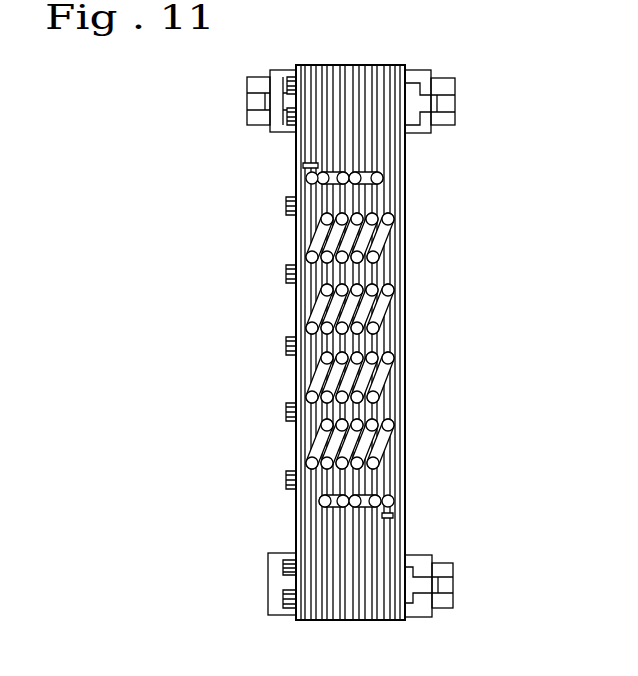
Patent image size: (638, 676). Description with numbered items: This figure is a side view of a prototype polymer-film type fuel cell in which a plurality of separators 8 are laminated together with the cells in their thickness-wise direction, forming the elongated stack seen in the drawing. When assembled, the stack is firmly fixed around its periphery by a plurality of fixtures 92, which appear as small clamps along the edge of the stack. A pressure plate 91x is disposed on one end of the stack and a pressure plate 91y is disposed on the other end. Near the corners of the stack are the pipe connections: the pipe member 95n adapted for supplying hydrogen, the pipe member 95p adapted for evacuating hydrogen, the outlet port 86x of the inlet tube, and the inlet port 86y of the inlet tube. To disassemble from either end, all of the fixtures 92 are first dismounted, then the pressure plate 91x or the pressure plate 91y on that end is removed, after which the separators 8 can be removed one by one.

The separator 8 is at (358, 364).
The outlet port of the inlet tube 86x is at (258, 117).
The inlet port of the inlet tube 86y is at (446, 570).
The pressure plate 91x is at (297, 317).
The pressure plate 91y is at (400, 305).
The fixture 92 is at (287, 273).
The pipe member adapted for supplying hydrogen 95n is at (444, 86).
The pipe member adapted for evacuating hydrogen 95p is at (280, 582).